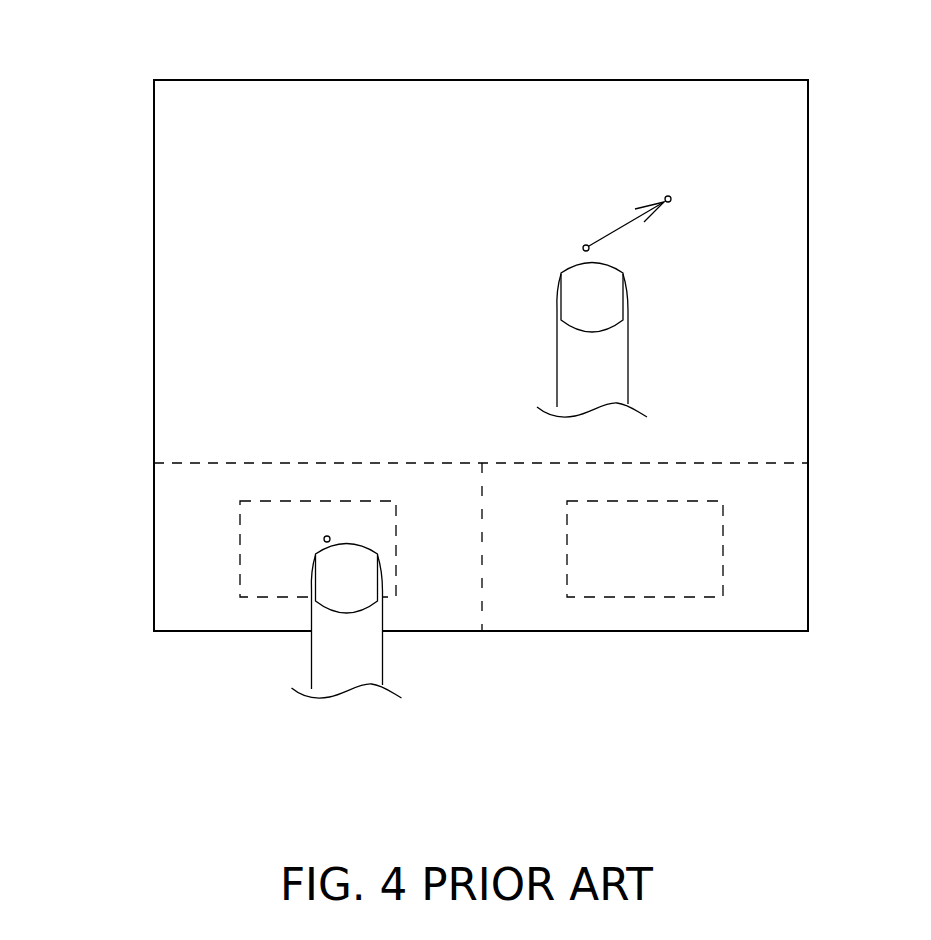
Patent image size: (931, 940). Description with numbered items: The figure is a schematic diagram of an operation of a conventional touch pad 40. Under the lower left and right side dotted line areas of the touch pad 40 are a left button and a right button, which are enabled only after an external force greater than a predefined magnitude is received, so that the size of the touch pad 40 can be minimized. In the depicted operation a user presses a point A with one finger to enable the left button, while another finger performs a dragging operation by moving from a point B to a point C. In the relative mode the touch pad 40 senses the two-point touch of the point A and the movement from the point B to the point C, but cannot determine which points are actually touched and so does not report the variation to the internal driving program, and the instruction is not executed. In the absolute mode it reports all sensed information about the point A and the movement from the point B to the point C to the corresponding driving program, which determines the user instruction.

The touch pad 40 is at (481, 80).
The point A is at (321, 523).
The point B is at (618, 226).
The point C is at (657, 192).